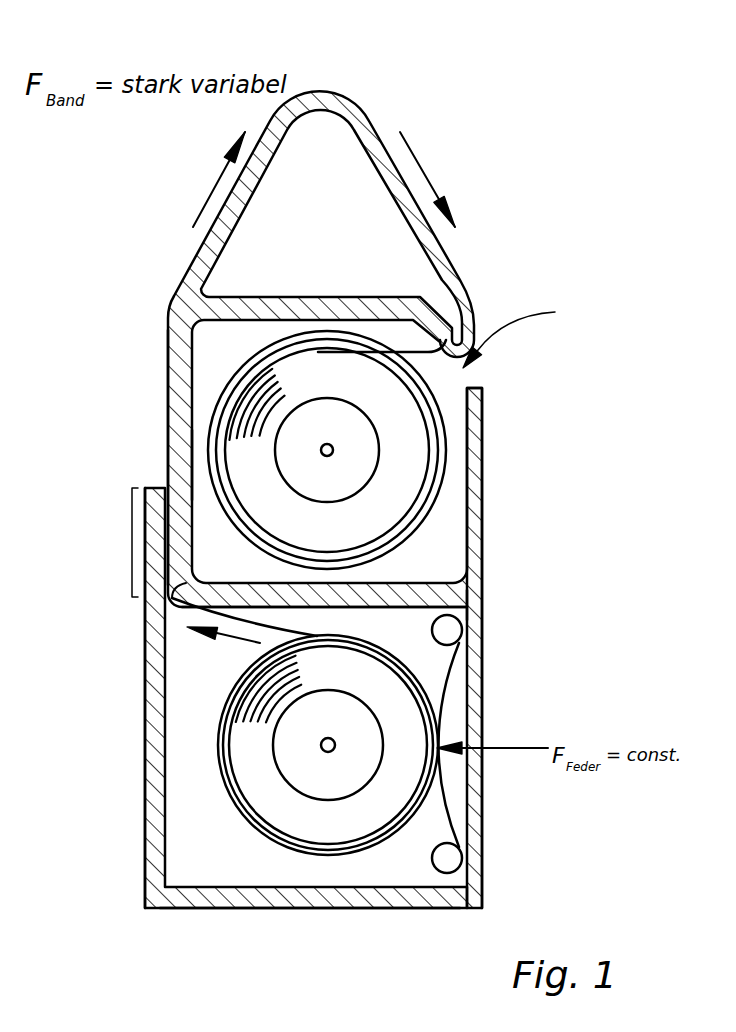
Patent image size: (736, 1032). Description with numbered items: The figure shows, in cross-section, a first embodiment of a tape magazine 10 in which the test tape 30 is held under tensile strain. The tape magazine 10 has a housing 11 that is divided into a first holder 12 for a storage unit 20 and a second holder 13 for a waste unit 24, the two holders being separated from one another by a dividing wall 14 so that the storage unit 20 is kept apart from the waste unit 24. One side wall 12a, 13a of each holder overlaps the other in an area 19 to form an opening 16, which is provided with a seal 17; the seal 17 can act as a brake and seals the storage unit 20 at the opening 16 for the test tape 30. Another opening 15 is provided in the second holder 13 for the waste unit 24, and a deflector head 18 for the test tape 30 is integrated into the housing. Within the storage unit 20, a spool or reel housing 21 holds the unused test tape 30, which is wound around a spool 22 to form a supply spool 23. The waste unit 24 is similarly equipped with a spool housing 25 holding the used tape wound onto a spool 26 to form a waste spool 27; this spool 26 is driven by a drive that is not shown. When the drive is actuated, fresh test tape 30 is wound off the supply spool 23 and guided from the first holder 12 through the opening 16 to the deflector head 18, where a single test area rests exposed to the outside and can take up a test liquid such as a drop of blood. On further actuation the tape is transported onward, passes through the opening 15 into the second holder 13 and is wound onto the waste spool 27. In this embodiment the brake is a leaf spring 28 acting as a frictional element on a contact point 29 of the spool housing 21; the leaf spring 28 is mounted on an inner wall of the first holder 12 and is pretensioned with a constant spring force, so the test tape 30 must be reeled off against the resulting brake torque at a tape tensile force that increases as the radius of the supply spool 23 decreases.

The tape magazine 10 is at (480, 98).
The housing 11 is at (483, 608).
The first holder 12 is at (190, 810).
The side wall 12a is at (148, 757).
The second holder 13 is at (215, 355).
The side wall 13a is at (168, 398).
The dividing wall 14 is at (412, 575).
The opening 15 is at (480, 388).
The opening 16 is at (188, 470).
The seal 17 is at (172, 604).
The deflector head 18 is at (330, 90).
The area 19 is at (127, 540).
The storage unit 20 is at (318, 908).
The spool housing 21 is at (382, 832).
The spool 22 is at (330, 754).
The supply spool 23 is at (275, 798).
The waste unit 24 is at (472, 362).
The spool housing 25 is at (440, 407).
The spool 26 is at (333, 451).
The waste spool 27 is at (397, 490).
The leaf spring 28 is at (455, 800).
The contact point 29 is at (445, 738).
The test tape 30 is at (97, 623).